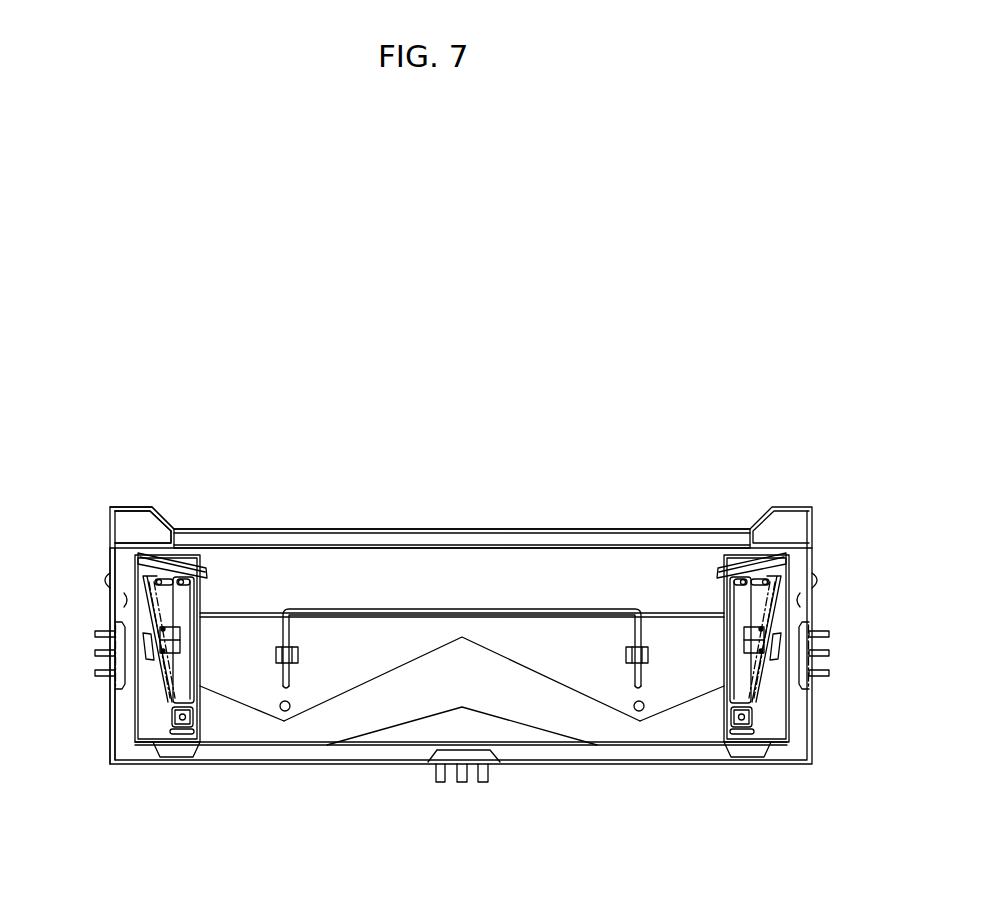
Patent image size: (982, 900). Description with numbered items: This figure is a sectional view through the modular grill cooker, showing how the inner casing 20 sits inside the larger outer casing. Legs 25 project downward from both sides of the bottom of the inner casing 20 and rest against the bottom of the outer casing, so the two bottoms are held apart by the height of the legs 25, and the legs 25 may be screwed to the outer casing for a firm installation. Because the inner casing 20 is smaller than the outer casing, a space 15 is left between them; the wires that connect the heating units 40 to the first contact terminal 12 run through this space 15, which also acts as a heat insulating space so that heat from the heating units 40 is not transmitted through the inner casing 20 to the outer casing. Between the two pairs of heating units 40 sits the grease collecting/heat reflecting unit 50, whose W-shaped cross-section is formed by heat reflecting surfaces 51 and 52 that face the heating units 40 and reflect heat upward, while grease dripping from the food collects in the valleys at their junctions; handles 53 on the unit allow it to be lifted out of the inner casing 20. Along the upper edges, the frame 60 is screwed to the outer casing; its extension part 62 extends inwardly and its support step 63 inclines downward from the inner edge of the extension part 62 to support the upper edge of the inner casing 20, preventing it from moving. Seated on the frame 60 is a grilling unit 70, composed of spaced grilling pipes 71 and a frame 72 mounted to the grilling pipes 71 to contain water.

The first contact terminal 12 is at (100, 650).
The space 15 is at (124, 603).
The inner casing 20 is at (800, 710).
The legs 25 is at (150, 762).
The heating units 40 is at (147, 707).
The grease collecting/heat reflecting unit 50 is at (664, 602).
The heat reflecting surface 51 is at (500, 652).
The heat reflecting surface 52 is at (240, 688).
The handles 53 is at (342, 610).
The frame 60 is at (98, 553).
The extension part 62 is at (138, 543).
The support step 63 is at (200, 556).
The grilling units 70 is at (832, 505).
The grilling pipes 71 is at (572, 541).
The frame 72 is at (130, 507).